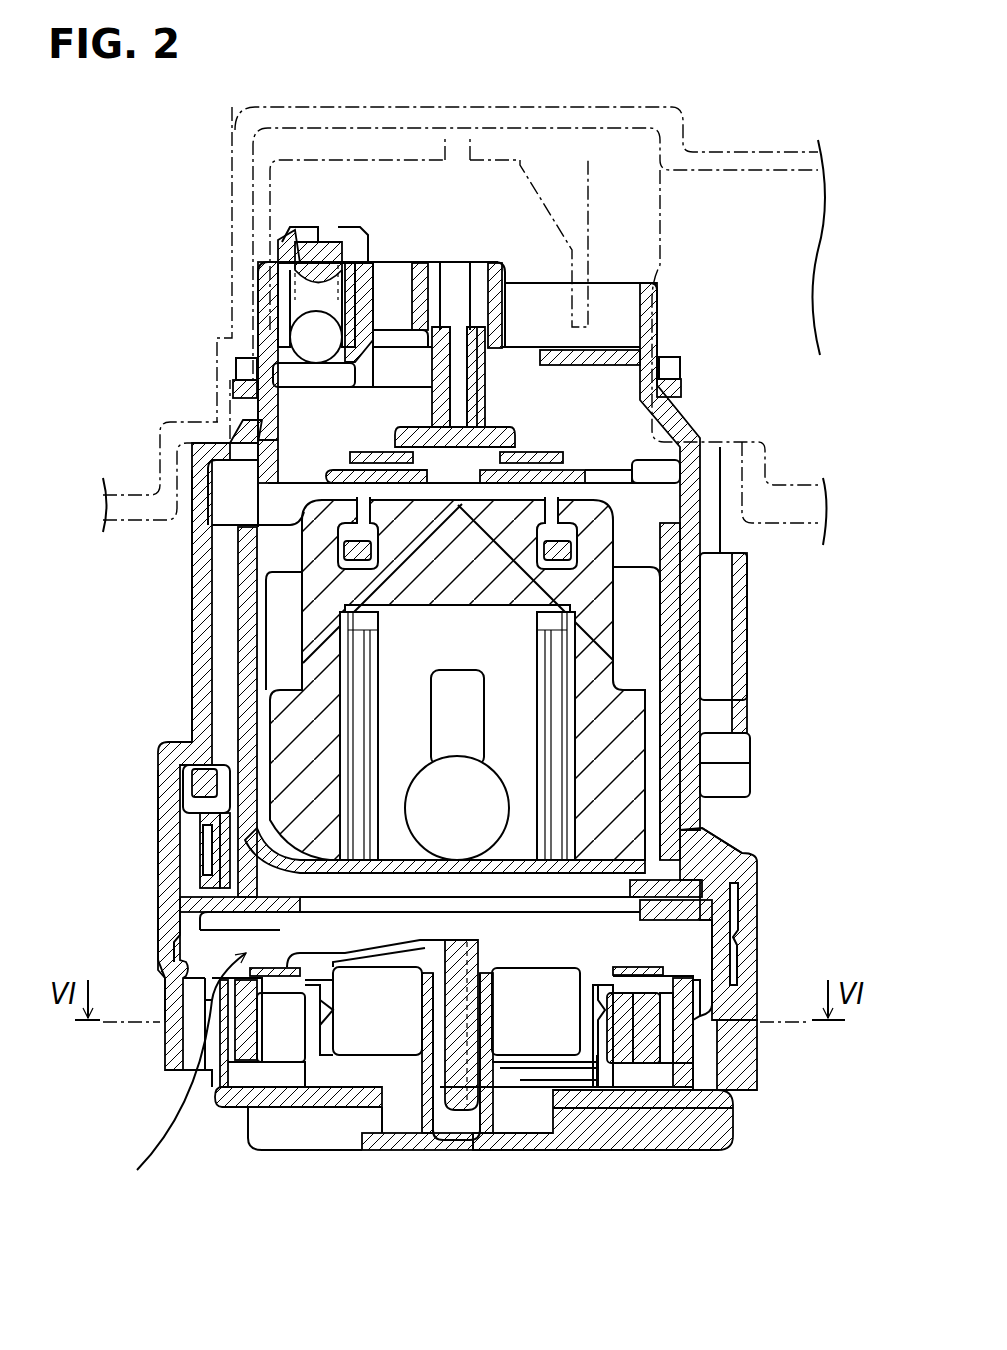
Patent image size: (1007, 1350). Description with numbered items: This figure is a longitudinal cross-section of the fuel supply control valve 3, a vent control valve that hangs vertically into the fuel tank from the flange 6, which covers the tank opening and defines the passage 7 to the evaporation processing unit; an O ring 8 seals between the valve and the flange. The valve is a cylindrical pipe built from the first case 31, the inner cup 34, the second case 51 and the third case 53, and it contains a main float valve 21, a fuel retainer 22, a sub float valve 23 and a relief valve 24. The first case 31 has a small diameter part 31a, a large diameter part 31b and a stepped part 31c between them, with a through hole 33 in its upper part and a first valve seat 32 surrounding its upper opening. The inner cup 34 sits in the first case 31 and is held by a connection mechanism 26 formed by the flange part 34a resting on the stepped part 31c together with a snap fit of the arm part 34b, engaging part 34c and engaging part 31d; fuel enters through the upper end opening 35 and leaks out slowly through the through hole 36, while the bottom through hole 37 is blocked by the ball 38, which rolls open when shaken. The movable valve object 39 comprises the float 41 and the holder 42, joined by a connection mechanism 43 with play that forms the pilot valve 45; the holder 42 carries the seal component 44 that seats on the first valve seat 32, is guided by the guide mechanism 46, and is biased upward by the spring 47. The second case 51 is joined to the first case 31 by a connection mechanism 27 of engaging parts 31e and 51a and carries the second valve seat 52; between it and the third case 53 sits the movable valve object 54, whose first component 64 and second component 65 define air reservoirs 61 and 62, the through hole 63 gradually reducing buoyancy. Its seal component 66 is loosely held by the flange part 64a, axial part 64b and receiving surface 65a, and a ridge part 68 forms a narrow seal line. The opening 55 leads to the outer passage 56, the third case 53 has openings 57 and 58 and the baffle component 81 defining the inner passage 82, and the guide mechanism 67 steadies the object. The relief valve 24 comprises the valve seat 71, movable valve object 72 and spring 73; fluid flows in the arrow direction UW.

The fuel supply control valve 3 is at (776, 442).
The flange 6 is at (694, 152).
The passage 7 is at (738, 195).
The O ring 8 is at (238, 386).
The main float valve 21 is at (162, 600).
The fuel retainer 22 is at (152, 715).
The sub float valve 23 is at (152, 904).
The relief valve 24 is at (197, 252).
The connection mechanism 26 is at (152, 804).
The connection mechanism 27 is at (152, 962).
The first case 31 is at (200, 622).
The small diameter part 31a is at (737, 838).
The large diameter part 31b is at (740, 898).
The stepped part 31c is at (745, 864).
The engaging part 31d is at (200, 802).
The engaging part 31e is at (176, 946).
The first valve seat 32 is at (368, 376).
The through hole 33 is at (228, 527).
The inner cup 34 is at (246, 652).
The flange part 34a is at (190, 896).
The arm part 34b is at (200, 840).
The engaging part 34c is at (188, 768).
The upper end opening 35 is at (240, 545).
The through hole 36 is at (262, 684).
The through hole 37 is at (622, 818).
The ball 38 is at (480, 796).
The movable valve object 39 is at (626, 508).
The float 41 is at (748, 692).
The holder 42 is at (682, 470).
The connection mechanism 43 is at (584, 560).
The seal component 44 is at (540, 454).
The pilot valve 45 is at (492, 438).
The guide mechanism 46 is at (438, 260).
The spring 47 is at (572, 722).
The second case 51 is at (178, 1032).
The engaging part 51a is at (180, 968).
The second valve seat 52 is at (690, 908).
The third case 53 is at (736, 1136).
The movable valve object 54 is at (704, 962).
The opening 55 is at (212, 1072).
The outer passage 56 is at (190, 1010).
The opening 57 is at (362, 1152).
The opening 58 is at (455, 1150).
The first air reservoir 61 is at (535, 1018).
The second air reservoir 62 is at (296, 1046).
The through hole 63 is at (432, 962).
The first component 64 is at (600, 1022).
The flange part 64a is at (546, 1062).
The axial part 64b is at (630, 1002).
The second component 65 is at (684, 1062).
The receiving surface 65a is at (702, 1002).
The seal component 66 is at (702, 983).
The guide mechanism 67 is at (428, 1046).
The ridge part 68 is at (665, 1052).
The valve seat 71 is at (286, 342).
The movable valve object 72 is at (307, 335).
The spring 73 is at (292, 290).
The baffle component 81 is at (217, 1070).
The inner passage 82 is at (246, 1066).
The arrow direction UW is at (105, 1147).